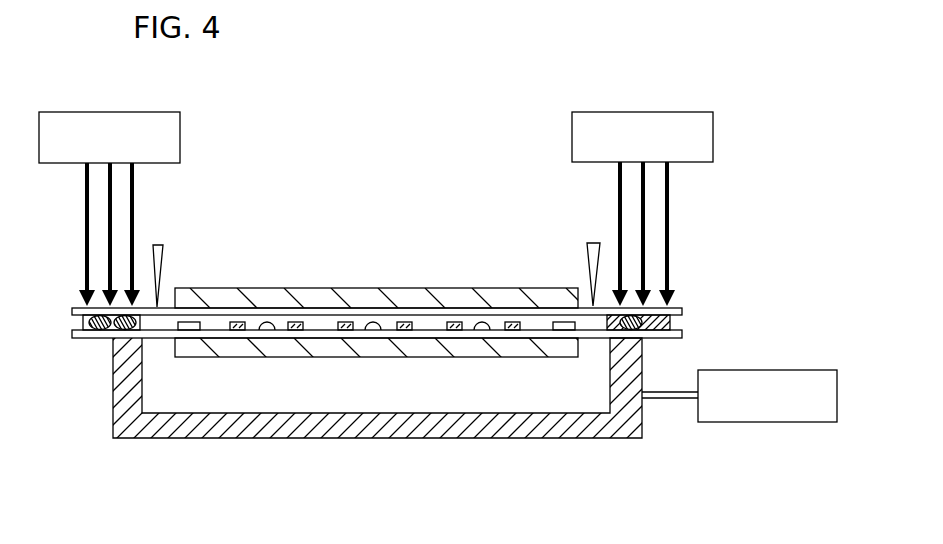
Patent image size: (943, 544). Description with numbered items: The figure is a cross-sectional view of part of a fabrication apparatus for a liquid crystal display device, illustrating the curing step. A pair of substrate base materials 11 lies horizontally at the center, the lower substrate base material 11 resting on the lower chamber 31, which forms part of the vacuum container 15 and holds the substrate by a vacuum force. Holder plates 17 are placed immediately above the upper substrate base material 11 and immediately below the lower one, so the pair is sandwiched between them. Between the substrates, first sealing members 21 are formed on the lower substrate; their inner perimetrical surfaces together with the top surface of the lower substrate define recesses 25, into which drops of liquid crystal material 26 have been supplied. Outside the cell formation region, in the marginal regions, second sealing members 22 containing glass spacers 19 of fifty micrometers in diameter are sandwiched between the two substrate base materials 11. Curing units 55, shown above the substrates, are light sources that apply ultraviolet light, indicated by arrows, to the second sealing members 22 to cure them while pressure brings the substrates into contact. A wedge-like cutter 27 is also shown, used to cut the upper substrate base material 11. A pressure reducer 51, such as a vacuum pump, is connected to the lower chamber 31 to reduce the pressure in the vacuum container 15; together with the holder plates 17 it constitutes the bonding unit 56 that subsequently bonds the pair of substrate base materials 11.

The curing unit 55 is at (180, 135).
The wedge-like cutter 27 is at (158, 245).
The substrate base material 11 is at (192, 308).
The second sealing member 22 is at (83, 322).
The glass spacer 19 is at (125, 331).
The holder plate 17 is at (405, 290).
The bonding unit 56 is at (519, 310).
The pressure reducer 51 is at (788, 370).
The first sealing member 21 is at (295, 338).
The recess 25 is at (240, 322).
The liquid crystal material 26 is at (267, 322).
The lower chamber 31 is at (345, 438).
The vacuum container 15 is at (379, 421).